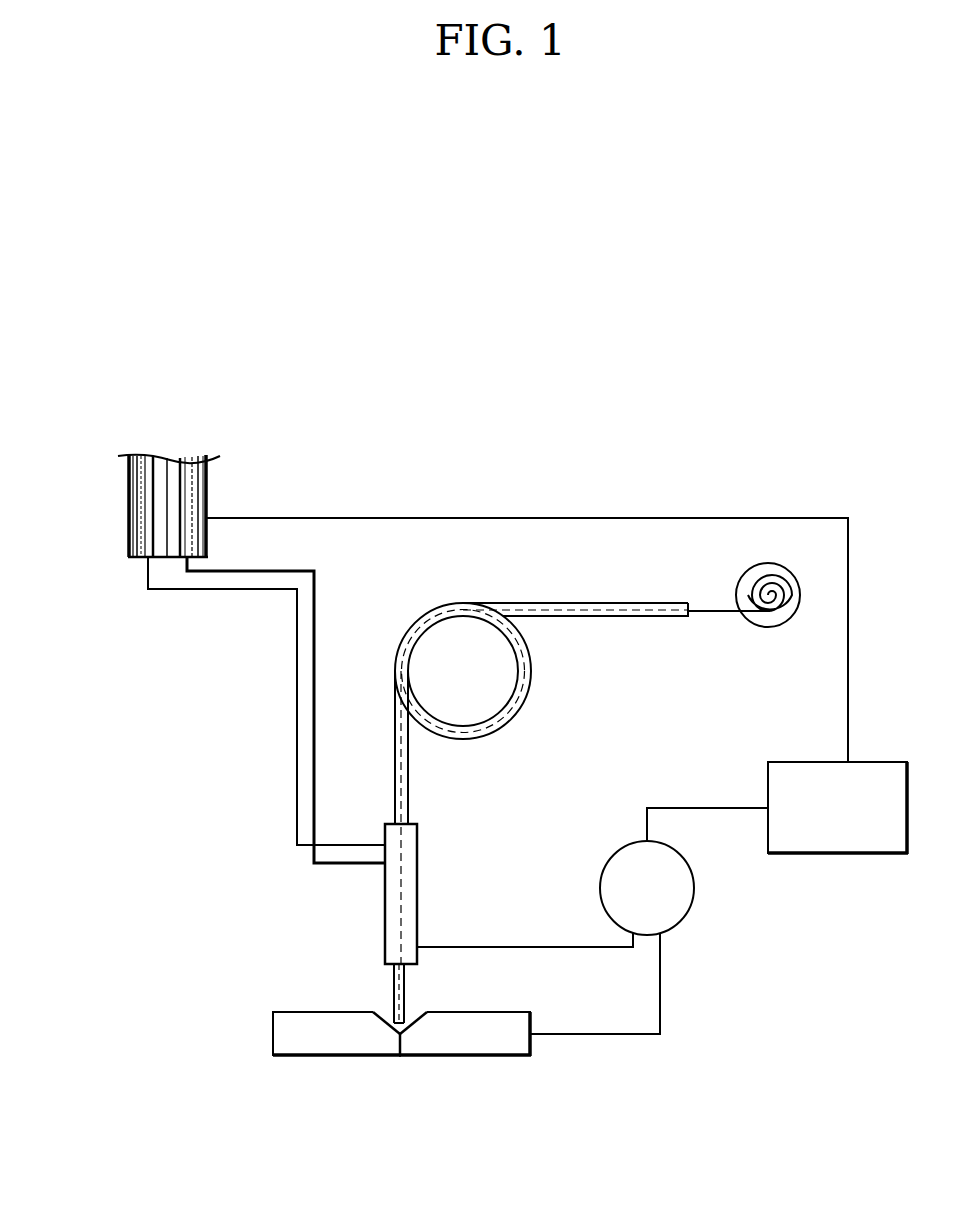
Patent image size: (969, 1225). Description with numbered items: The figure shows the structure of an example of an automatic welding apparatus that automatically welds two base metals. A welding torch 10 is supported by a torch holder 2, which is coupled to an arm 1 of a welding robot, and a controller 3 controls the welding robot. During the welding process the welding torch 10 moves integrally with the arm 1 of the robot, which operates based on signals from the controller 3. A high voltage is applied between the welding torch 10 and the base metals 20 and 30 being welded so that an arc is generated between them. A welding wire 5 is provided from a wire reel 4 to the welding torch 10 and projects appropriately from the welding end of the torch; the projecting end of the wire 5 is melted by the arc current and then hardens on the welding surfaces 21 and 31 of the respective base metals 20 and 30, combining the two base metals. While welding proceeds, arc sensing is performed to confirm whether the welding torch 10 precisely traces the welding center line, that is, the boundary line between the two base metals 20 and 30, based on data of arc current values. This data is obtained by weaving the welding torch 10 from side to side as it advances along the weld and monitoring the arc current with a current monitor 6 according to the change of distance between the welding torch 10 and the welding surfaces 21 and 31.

The arm 1 is at (130, 519).
The torch holder 2 is at (296, 708).
The controller 3 is at (820, 853).
The wire reel 4 is at (775, 563).
The welding wire 5 is at (708, 610).
The current monitor 6 is at (686, 915).
The welding torch 10 is at (385, 896).
The base metal 20 is at (336, 1040).
The welding surface 21 is at (384, 1012).
The base metal 30 is at (494, 1040).
The welding surface 31 is at (420, 1012).